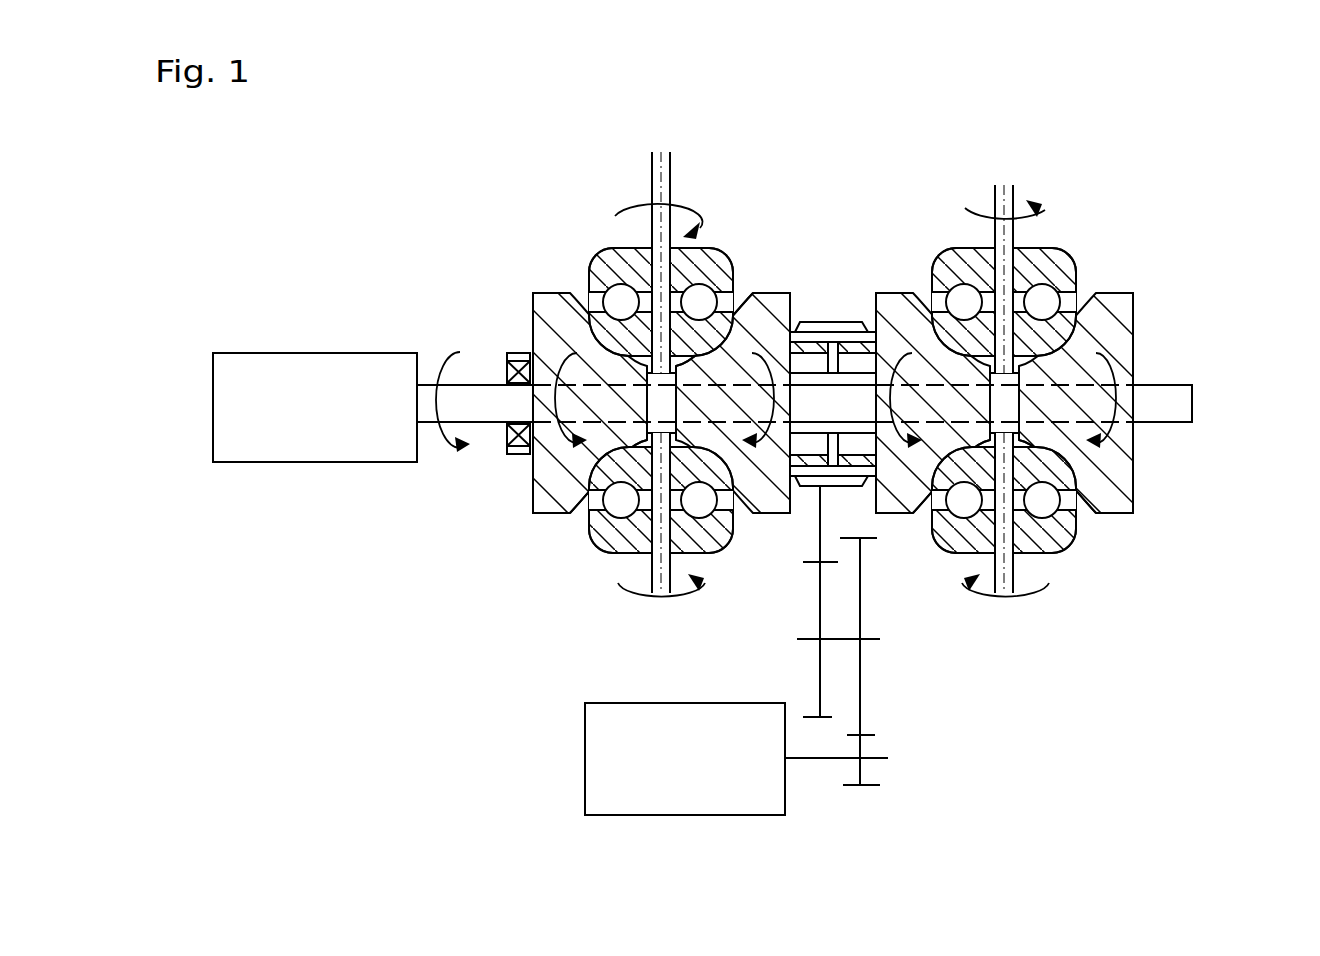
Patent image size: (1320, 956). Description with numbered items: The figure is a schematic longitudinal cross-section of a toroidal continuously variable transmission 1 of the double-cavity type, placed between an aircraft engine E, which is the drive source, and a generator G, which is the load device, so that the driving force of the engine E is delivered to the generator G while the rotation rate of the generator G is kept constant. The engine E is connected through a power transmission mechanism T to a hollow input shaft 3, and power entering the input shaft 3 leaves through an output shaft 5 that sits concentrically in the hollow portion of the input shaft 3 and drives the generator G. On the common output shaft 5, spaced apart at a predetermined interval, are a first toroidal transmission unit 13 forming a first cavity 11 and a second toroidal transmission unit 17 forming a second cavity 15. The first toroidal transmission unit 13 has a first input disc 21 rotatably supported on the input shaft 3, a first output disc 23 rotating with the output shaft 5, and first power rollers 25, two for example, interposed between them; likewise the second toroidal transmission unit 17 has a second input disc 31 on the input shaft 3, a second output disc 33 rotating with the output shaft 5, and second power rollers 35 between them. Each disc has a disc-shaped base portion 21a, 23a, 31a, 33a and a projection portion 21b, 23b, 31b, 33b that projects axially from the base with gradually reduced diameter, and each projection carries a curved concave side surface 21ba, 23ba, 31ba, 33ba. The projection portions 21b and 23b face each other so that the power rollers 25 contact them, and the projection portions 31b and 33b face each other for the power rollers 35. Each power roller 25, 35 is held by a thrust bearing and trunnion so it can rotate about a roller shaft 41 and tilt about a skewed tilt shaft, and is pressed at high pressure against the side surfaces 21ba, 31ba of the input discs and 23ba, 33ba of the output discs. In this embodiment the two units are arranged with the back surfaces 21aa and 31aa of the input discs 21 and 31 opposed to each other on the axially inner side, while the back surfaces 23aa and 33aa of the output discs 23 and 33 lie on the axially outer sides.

The toroidal continuously variable transmission 1 is at (496, 196).
The input shaft 3 is at (856, 305).
The output shaft 5 is at (478, 400).
The first cavity 11 is at (650, 436).
The first toroidal transmission unit 13 is at (741, 300).
The second cavity 15 is at (1052, 426).
The second toroidal transmission unit 17 is at (1084, 300).
The first input disc 21 is at (760, 431).
The base portion of first input disc 21a is at (765, 305).
The back surface of first input disc 21aa is at (778, 308).
The projection portion of first input disc 21b is at (686, 372).
The side surface of first input disc 21ba is at (745, 512).
The first output disc 23 is at (577, 439).
The base portion of first output disc 23a is at (545, 293).
The back surface of first output disc 23aa is at (533, 325).
The projection portion of first output disc 23b is at (600, 548).
The side surface of first output disc 23ba is at (573, 512).
The first power roller 25 is at (610, 272).
The second input disc 31 is at (960, 426).
The base portion of second input disc 31a is at (886, 300).
The back surface of second input disc 31aa is at (880, 305).
The projection portion of second input disc 31b is at (965, 530).
The side surface of second input disc 31ba is at (930, 512).
The second output disc 33 is at (1122, 449).
The base portion of second output disc 33a is at (1115, 292).
The back surface of second output disc 33aa is at (1135, 472).
The projection portion of second output disc 33b is at (1062, 545).
The side surface of second output disc 33ba is at (1080, 504).
The second power roller 35 is at (1063, 272).
The roller shaft 41 is at (652, 172).
The generator G is at (313, 375).
The aircraft engine E is at (612, 755).
The power transmission mechanism T is at (873, 642).